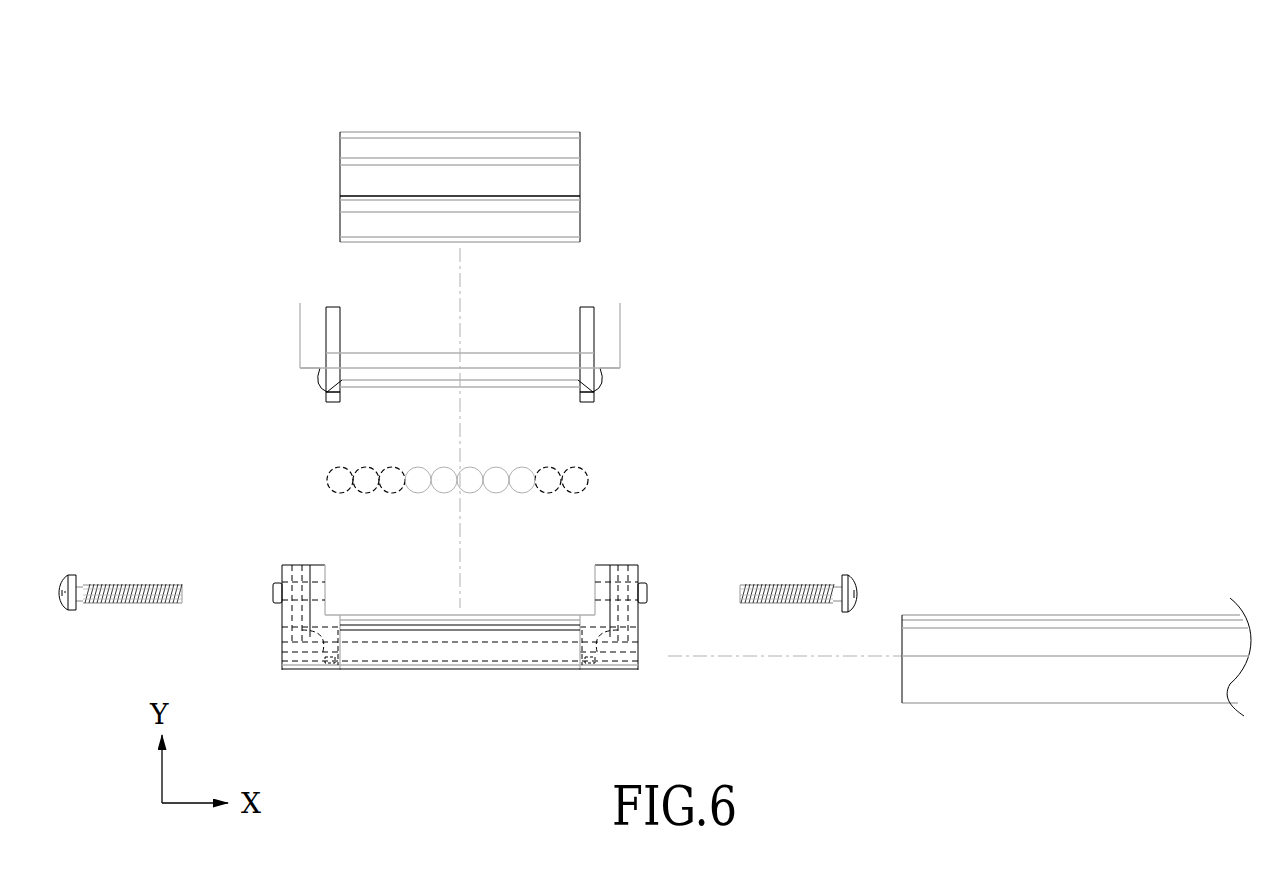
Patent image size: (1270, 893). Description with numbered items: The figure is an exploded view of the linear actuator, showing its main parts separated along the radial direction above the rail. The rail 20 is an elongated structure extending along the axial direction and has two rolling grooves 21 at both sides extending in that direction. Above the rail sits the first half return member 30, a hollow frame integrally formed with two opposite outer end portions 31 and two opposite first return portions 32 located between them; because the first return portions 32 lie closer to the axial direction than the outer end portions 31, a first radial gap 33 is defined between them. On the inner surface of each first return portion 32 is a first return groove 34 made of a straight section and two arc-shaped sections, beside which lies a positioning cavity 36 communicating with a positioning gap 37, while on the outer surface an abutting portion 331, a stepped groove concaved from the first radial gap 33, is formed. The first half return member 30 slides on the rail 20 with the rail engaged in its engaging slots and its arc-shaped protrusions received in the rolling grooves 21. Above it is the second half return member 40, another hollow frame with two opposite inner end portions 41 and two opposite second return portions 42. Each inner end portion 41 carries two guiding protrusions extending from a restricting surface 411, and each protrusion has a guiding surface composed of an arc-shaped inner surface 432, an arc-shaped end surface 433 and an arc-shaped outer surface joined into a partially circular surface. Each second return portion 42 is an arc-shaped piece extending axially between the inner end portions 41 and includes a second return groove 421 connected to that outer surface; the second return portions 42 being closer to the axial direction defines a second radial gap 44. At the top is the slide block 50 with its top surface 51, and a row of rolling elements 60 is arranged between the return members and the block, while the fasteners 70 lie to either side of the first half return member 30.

The rail 20 is at (1076, 621).
The rolling grooves 21 is at (1090, 650).
The first half return member 30 is at (452, 618).
The outer end portions 31 is at (282, 640).
The first return portions 32 is at (483, 672).
The first radial gap 33 is at (587, 615).
The abutting portion 331 is at (532, 620).
The first return groove 34 is at (308, 652).
The positioning cavity 36 is at (333, 665).
The positioning gap 37 is at (340, 667).
The second half return member 40 is at (425, 338).
The inner end portions 41 is at (587, 320).
The restricting surface 411 is at (308, 367).
The second return portions 42 is at (460, 367).
The second return groove 421 is at (496, 383).
The arc-shaped inner surface 432 is at (333, 386).
The arc-shaped end surface 433 is at (326, 382).
The second radial gap 44 is at (501, 356).
The slide block 50 is at (459, 141).
The top surface 51 is at (437, 150).
The rolling elements 60 is at (534, 466).
The fasteners 70 is at (130, 577).